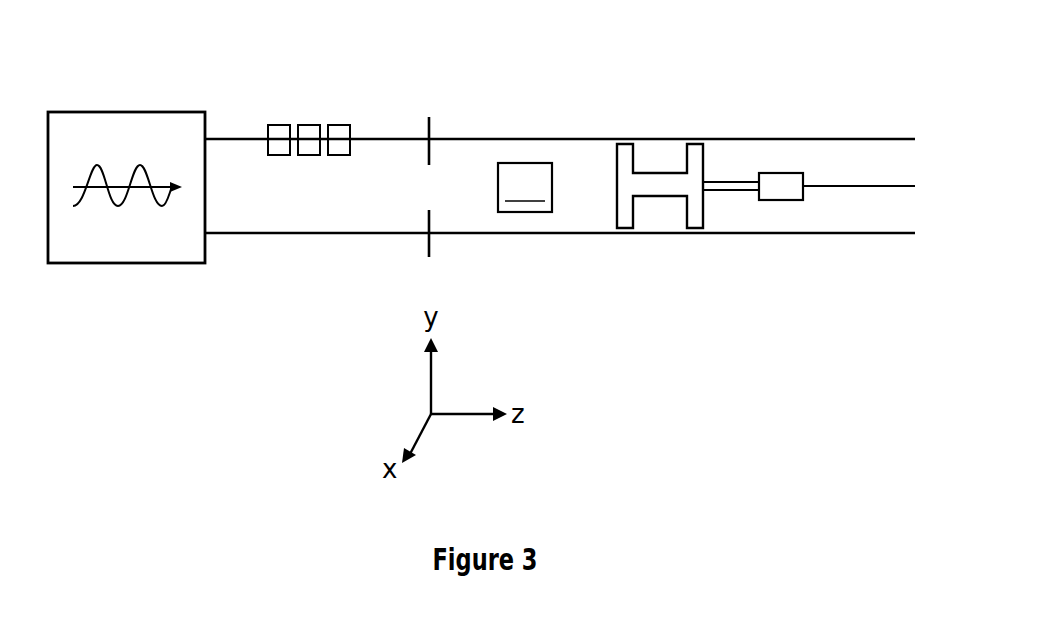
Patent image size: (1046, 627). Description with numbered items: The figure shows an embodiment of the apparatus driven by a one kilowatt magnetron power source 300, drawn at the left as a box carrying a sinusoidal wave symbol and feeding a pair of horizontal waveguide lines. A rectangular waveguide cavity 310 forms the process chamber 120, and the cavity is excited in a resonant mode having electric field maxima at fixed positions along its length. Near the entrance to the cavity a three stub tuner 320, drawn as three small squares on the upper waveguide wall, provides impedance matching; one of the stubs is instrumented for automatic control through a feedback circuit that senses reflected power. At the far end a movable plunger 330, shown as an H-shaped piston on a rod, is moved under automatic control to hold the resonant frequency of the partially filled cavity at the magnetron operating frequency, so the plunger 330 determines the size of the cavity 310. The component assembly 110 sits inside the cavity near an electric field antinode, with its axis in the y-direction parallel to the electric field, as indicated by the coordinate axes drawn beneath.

The magnetron power source 300 is at (118, 112).
The three stub tuner 320 is at (340, 125).
The process chamber 120 is at (445, 157).
The rectangular waveguide cavity 310 is at (507, 227).
The component assembly 110 is at (525, 188).
The movable plunger 330 is at (698, 215).